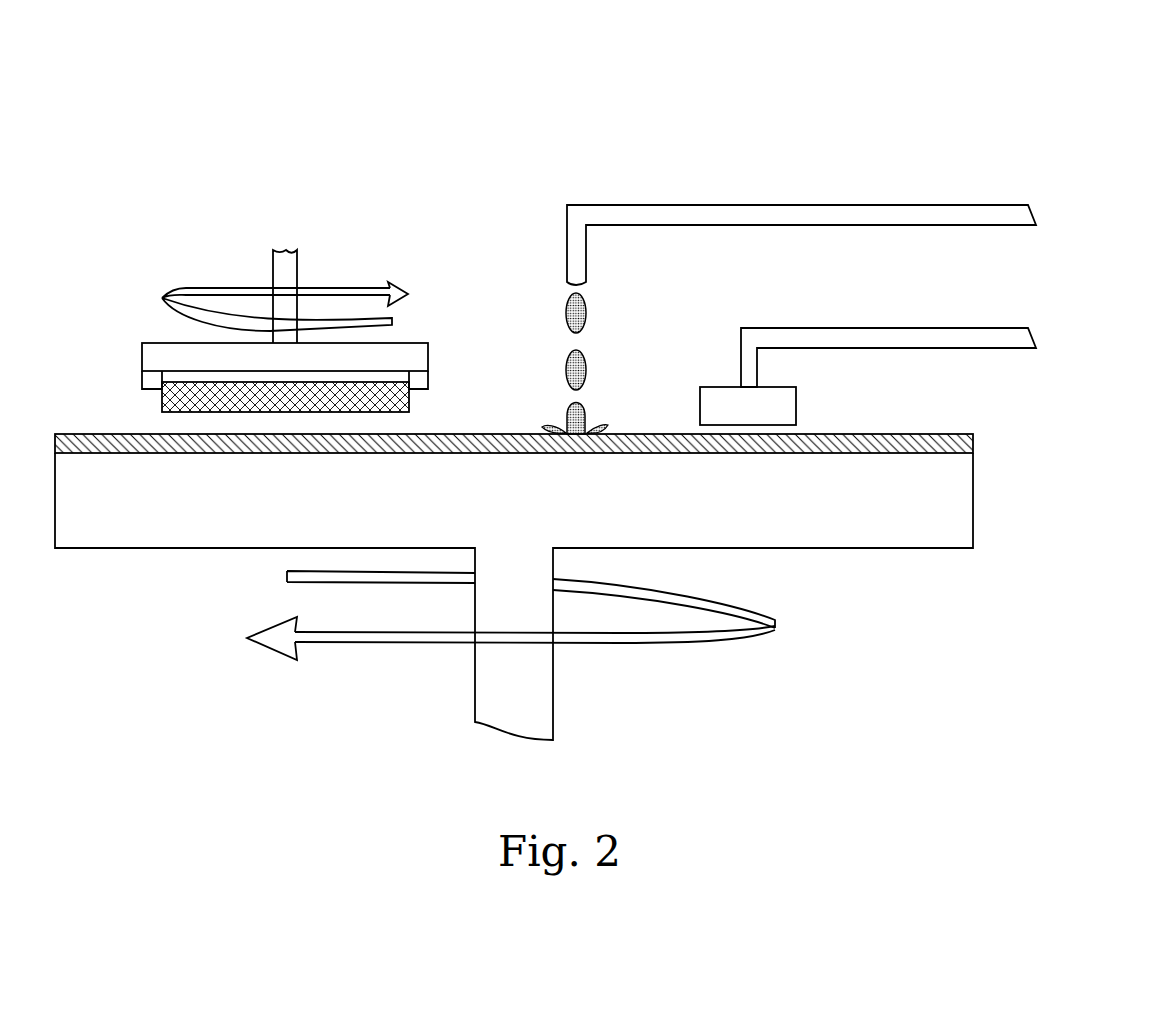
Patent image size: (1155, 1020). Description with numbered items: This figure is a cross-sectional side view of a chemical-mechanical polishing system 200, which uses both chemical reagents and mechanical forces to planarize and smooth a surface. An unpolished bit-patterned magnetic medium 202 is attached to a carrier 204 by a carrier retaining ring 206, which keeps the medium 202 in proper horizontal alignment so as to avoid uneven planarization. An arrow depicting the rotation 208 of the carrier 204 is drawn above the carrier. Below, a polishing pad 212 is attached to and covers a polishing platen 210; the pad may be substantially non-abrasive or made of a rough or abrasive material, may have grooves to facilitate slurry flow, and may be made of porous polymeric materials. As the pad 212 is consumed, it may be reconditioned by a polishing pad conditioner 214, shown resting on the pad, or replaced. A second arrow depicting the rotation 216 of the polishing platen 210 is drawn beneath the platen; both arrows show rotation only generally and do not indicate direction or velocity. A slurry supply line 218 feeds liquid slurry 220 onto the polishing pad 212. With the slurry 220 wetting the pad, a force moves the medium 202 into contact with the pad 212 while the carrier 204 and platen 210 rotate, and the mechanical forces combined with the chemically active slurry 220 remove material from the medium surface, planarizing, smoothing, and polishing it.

The chemical-mechanical polishing system 200 is at (72, 125).
The bit-patterned magnetic medium 202 is at (173, 400).
The carrier 204 is at (150, 355).
The carrier retaining ring 206 is at (148, 380).
The rotation of the carrier 208 is at (220, 284).
The polishing platen 210 is at (897, 535).
The polishing pad 212 is at (975, 438).
The polishing pad conditioner 214 is at (778, 402).
The rotation of the polishing platen 216 is at (770, 628).
The slurry supply line 218 is at (838, 215).
The slurry 220 is at (582, 313).